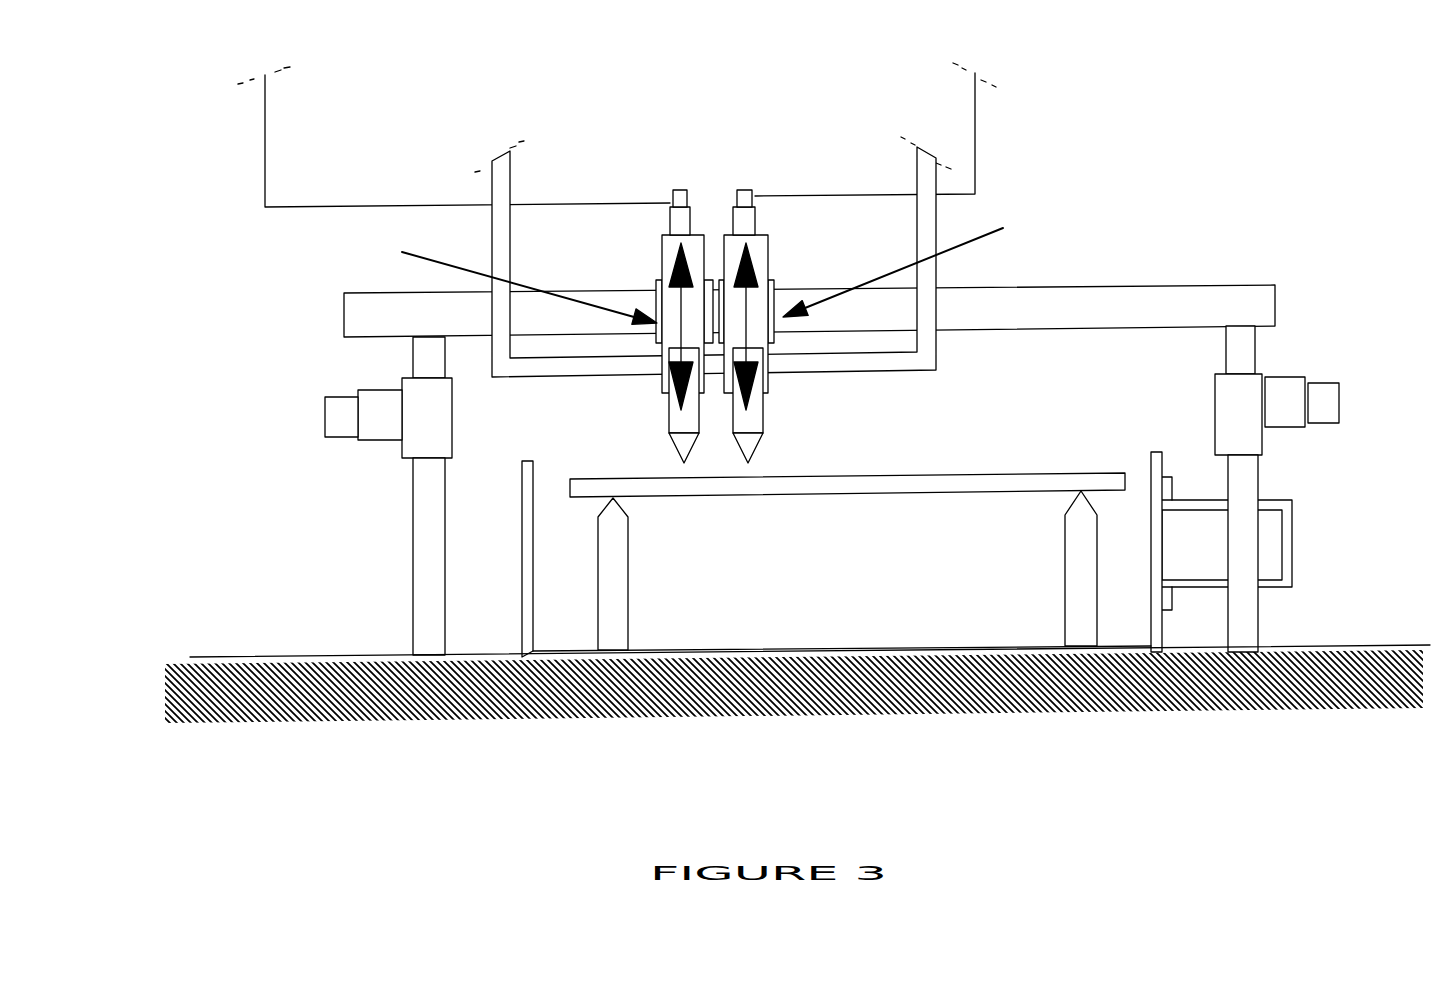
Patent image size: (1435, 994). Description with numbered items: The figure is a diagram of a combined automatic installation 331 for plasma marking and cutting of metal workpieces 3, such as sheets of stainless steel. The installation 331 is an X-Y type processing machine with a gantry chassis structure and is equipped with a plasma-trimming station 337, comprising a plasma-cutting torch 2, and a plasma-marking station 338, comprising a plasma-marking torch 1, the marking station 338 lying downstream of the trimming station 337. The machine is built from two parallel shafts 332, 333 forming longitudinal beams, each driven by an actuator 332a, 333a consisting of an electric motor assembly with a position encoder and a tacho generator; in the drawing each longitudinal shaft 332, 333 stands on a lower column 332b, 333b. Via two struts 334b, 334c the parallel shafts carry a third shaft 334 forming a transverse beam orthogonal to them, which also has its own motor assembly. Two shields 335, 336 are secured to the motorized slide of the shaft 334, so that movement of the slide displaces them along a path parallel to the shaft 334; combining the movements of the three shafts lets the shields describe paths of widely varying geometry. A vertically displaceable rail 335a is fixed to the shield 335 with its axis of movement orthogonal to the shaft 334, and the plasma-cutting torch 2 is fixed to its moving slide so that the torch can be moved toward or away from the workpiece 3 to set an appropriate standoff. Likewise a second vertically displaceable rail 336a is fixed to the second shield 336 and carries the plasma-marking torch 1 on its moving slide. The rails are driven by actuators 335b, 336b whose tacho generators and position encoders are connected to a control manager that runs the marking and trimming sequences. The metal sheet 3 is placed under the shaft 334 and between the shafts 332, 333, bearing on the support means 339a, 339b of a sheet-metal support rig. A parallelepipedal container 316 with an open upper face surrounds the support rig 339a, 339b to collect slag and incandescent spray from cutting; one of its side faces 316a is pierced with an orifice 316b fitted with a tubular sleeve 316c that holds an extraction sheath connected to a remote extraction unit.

The plasma-marking torch 1 is at (747, 423).
The plasma-cutting torch 2 is at (665, 427).
The metal workpiece 3 is at (927, 483).
The container 316 is at (528, 590).
The side face 316a is at (1153, 465).
The orifice 316b is at (1153, 552).
The tubular sleeve 316c is at (1287, 540).
The combined automatic installation 331 is at (797, 407).
The parallel shaft 332 is at (430, 420).
The actuator 332a is at (363, 433).
The left support column 332b is at (425, 575).
The parallel shaft 333 is at (1215, 423).
The actuator 333a is at (1302, 418).
The right support column 333b is at (1242, 630).
The third shaft 334 is at (1090, 297).
The strut 334b is at (408, 359).
The strut 334c is at (1233, 346).
The shield 335 is at (625, 258).
The vertically displaceable rail 335a is at (660, 237).
The actuator 335b is at (668, 218).
The shield 336 is at (797, 258).
The vertically displaceable rail 336a is at (755, 245).
The actuator 336b is at (739, 220).
The plasma-trimming station 337 is at (501, 279).
The plasma-marking station 338 is at (919, 264).
The support means 339a is at (623, 590).
The support means 339b is at (1075, 547).